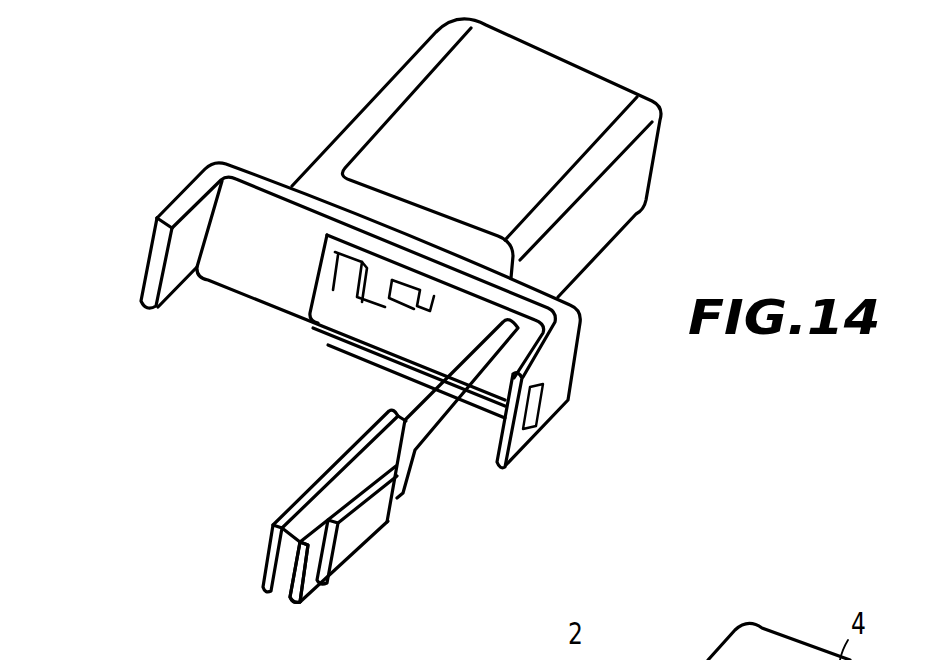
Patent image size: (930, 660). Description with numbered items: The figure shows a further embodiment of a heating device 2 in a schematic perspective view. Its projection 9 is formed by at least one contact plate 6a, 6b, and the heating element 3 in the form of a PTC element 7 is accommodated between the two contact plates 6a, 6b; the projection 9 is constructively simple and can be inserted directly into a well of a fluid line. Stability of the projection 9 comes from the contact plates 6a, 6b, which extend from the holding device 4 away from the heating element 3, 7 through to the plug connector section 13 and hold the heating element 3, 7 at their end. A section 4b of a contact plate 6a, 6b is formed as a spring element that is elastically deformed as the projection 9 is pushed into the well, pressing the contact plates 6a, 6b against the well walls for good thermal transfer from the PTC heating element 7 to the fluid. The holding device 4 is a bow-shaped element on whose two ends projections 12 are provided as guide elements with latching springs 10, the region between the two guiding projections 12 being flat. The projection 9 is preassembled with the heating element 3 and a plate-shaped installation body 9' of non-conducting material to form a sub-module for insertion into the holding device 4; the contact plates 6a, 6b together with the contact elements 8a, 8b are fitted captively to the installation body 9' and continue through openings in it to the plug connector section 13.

The heating device 2 is at (146, 184).
The holding device 4 is at (257, 182).
The plug connector section 13 is at (575, 92).
The projections 12 is at (150, 268).
The latching springs 10 is at (527, 423).
The projection 9 is at (120, 423).
The installation body 9' is at (360, 306).
The contact element 8b is at (352, 313).
The contact element 8a is at (453, 312).
The contact plate 6a is at (397, 497).
The contact plate 6b is at (297, 493).
The section 4b is at (347, 542).
The heating element 3 is at (283, 583).
The PTC element 7 is at (299, 572).